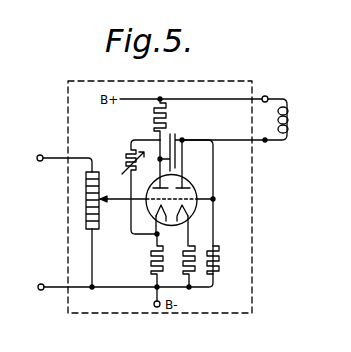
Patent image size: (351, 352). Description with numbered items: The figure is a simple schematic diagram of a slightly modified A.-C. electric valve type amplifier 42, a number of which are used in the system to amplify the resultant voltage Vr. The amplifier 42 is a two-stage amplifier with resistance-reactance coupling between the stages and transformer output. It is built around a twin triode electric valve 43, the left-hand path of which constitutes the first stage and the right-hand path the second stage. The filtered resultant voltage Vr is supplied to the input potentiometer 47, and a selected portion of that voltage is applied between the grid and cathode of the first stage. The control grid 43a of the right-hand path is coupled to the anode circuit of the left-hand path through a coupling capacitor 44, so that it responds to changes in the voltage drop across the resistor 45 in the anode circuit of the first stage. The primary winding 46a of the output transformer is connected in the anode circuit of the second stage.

The A.-C. electric valve type amplifier 42 is at (237, 81).
The twin triode electric valve 43 is at (198, 192).
The control grid 43a is at (196, 208).
The coupling capacitor 44 is at (181, 174).
The resistor 45 is at (153, 119).
The primary winding 46a is at (284, 109).
The input potentiometer 47 is at (86, 201).